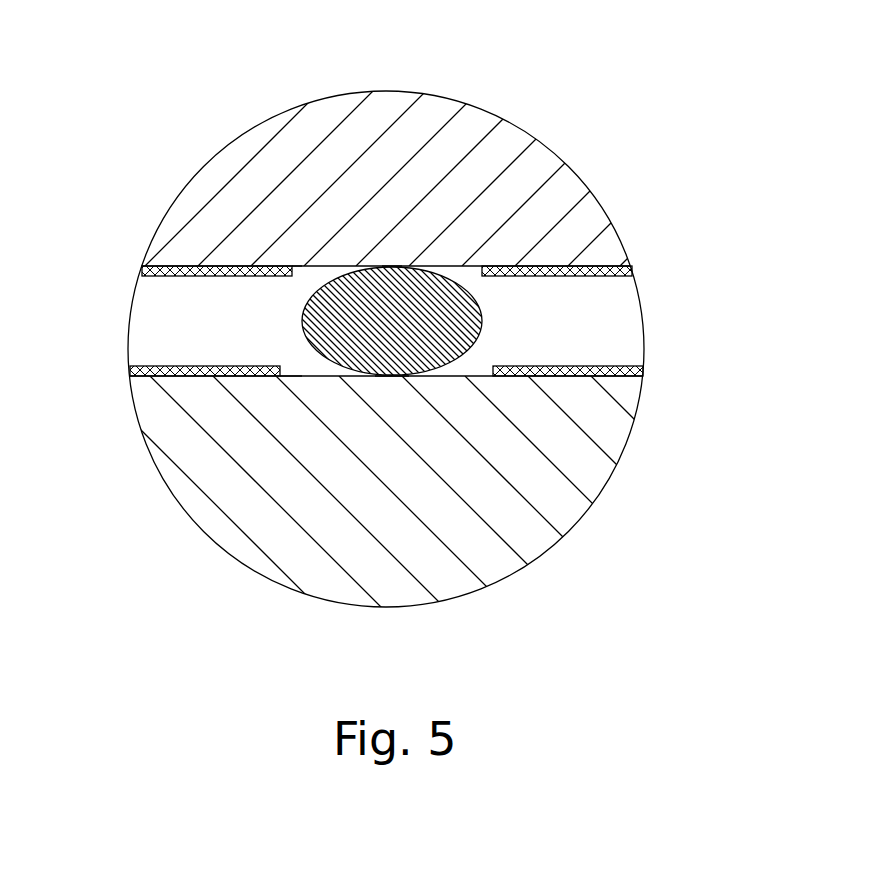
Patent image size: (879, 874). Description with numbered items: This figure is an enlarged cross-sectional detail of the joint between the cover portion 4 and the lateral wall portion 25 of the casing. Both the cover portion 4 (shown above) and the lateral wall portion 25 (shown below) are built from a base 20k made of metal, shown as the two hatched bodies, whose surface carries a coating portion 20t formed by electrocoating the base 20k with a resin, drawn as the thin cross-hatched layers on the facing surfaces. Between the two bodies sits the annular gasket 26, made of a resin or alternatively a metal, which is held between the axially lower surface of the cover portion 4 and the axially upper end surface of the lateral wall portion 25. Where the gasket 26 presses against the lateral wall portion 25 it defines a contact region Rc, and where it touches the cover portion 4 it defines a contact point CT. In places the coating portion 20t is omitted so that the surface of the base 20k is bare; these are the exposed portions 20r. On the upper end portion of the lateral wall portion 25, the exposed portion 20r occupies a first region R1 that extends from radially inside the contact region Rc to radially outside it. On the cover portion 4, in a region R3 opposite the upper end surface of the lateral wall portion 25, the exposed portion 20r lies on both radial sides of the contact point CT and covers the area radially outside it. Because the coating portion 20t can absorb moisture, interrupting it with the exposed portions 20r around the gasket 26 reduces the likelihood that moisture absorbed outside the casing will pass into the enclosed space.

The cover portion 4 is at (540, 172).
The base 20k is at (428, 125).
The coating portion 20t is at (543, 279).
The exposed portion 20r is at (463, 268).
The lateral wall portion 25 is at (528, 536).
The gasket 26 is at (483, 328).
The contact point CT is at (392, 265).
The first region R1 is at (315, 363).
The region of the cover portion R3 is at (310, 274).
The contact region Rc is at (385, 377).